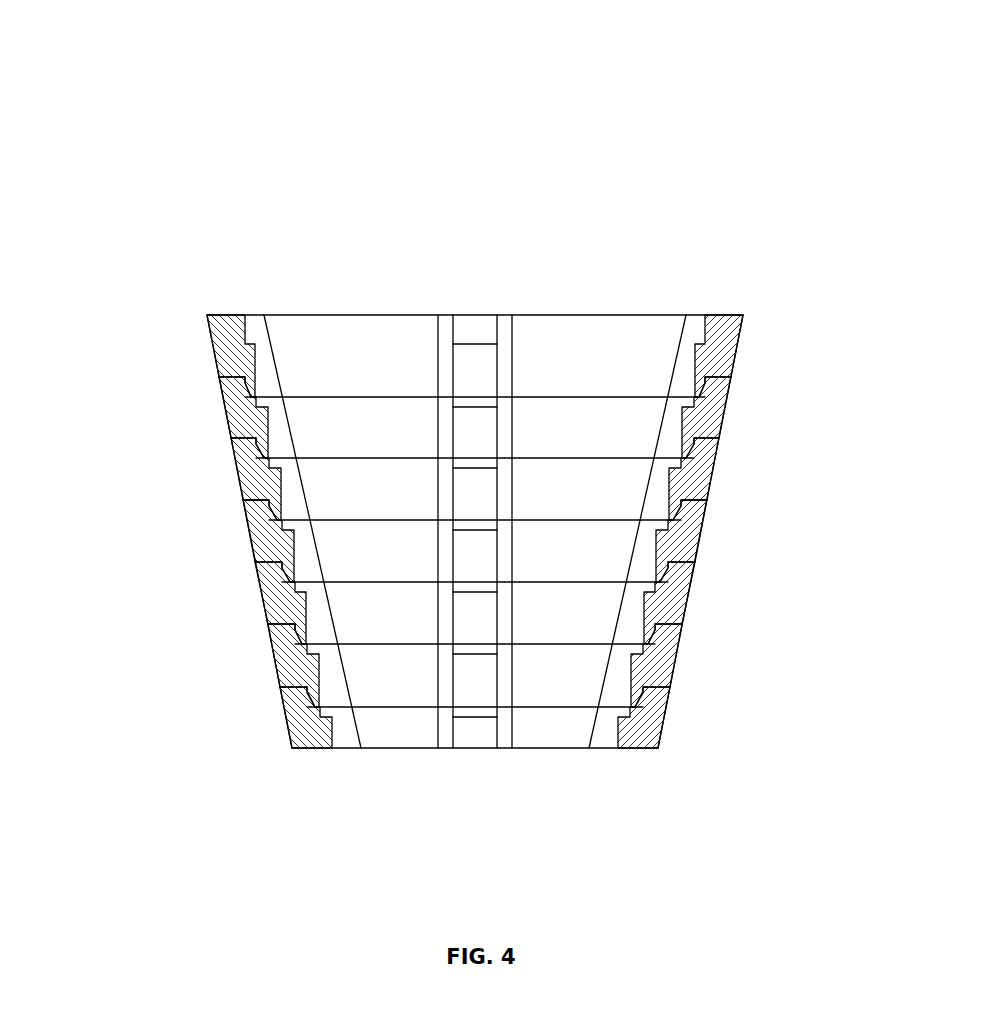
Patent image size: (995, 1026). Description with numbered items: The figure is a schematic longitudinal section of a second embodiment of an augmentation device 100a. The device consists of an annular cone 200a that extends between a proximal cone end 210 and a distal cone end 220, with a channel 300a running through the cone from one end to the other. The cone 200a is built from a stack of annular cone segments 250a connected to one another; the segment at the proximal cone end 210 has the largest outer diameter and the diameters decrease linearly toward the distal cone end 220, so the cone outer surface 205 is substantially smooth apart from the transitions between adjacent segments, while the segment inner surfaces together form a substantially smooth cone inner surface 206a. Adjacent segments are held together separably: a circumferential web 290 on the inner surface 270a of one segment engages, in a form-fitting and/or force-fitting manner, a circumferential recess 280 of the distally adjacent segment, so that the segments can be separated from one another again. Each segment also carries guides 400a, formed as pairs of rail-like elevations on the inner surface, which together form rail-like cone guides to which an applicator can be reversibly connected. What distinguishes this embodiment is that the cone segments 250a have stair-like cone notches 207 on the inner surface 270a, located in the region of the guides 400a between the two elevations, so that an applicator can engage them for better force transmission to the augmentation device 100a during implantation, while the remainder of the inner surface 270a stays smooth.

The augmentation device 100a is at (727, 129).
The cone 200a is at (832, 320).
The cone outer surface 205 is at (701, 546).
The cone inner surface 206a is at (337, 742).
The cone notches 207 is at (702, 341).
The proximal cone end 210 is at (164, 284).
The distal cone end 220 is at (224, 771).
The cone segments 250a is at (285, 713).
The cone segment inner surface 270a is at (253, 370).
The recess 280 is at (700, 382).
The web 290 is at (592, 413).
The channel 300a is at (567, 678).
The guides 400a is at (595, 748).